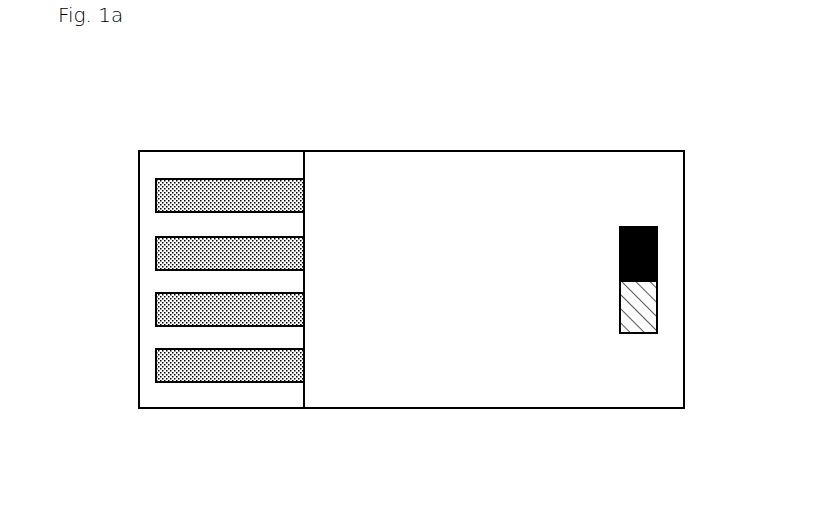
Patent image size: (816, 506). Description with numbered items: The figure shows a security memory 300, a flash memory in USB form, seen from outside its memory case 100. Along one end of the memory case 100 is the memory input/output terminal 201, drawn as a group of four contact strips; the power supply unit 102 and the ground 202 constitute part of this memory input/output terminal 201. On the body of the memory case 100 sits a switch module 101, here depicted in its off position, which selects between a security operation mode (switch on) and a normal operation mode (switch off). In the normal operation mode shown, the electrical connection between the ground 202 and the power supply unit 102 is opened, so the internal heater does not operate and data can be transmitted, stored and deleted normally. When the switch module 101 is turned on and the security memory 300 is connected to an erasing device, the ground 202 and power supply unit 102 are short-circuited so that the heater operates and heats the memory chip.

The security memory 300 is at (140, 112).
The memory case 100 is at (606, 170).
The switch module 101 is at (650, 314).
The power supply unit 102 is at (230, 406).
The memory input/output terminal 201 is at (188, 284).
The ground 202 is at (240, 191).